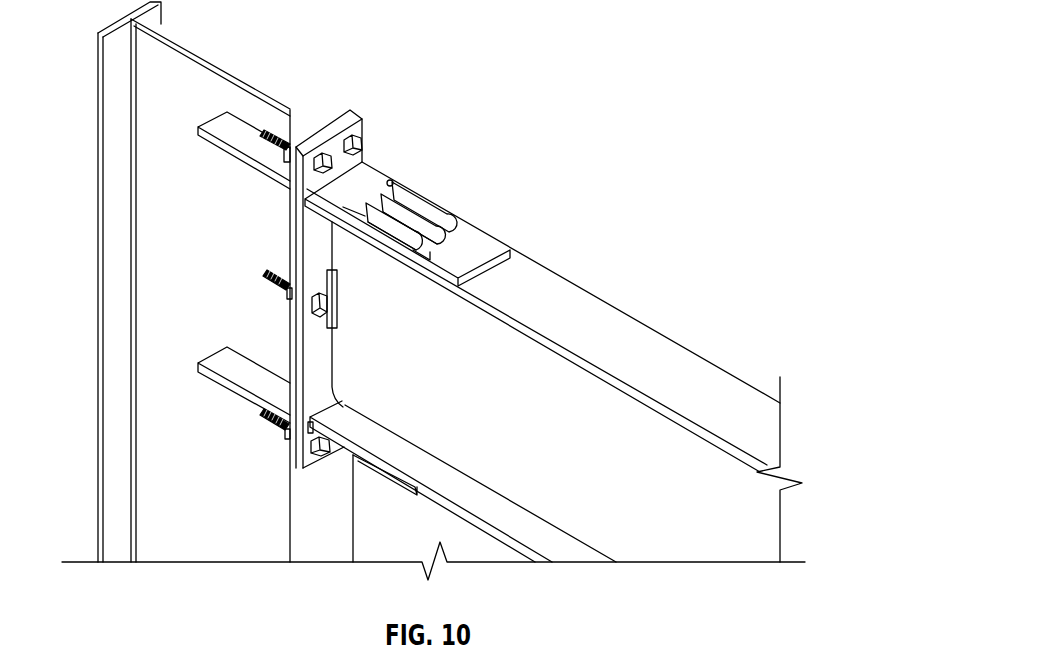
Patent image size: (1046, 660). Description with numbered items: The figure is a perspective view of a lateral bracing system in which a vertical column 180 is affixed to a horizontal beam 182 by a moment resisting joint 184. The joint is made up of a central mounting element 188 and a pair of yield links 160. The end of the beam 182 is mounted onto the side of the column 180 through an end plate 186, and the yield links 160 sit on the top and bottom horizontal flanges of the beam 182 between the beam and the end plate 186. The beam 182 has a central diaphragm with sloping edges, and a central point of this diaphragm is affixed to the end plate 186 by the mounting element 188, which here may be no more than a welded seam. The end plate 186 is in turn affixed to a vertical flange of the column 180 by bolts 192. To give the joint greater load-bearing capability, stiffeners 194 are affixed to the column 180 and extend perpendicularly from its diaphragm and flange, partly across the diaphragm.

The yield links 160 is at (487, 243).
The vertical column 180 is at (226, 522).
The horizontal beam 182 is at (644, 481).
The moment resisting joint 184 is at (416, 155).
The end plate 186 is at (337, 140).
The mounting element 188 is at (333, 295).
The bolts 192 is at (272, 128).
The stiffeners 194 is at (212, 138).